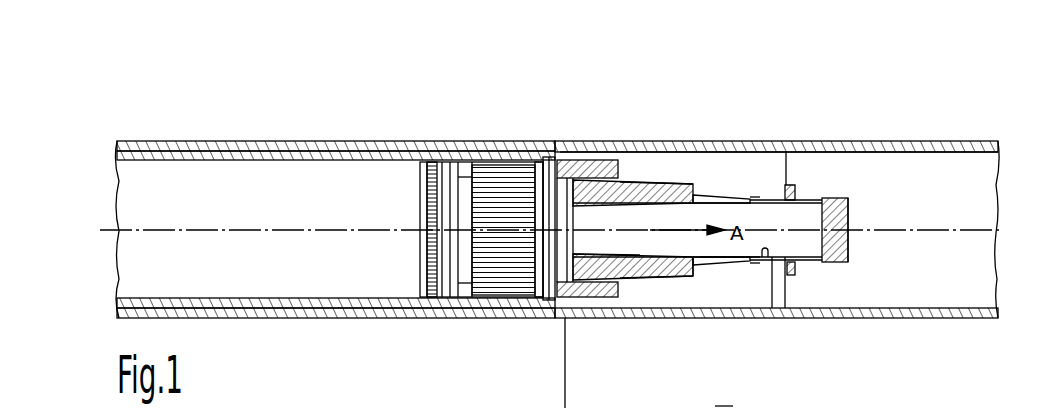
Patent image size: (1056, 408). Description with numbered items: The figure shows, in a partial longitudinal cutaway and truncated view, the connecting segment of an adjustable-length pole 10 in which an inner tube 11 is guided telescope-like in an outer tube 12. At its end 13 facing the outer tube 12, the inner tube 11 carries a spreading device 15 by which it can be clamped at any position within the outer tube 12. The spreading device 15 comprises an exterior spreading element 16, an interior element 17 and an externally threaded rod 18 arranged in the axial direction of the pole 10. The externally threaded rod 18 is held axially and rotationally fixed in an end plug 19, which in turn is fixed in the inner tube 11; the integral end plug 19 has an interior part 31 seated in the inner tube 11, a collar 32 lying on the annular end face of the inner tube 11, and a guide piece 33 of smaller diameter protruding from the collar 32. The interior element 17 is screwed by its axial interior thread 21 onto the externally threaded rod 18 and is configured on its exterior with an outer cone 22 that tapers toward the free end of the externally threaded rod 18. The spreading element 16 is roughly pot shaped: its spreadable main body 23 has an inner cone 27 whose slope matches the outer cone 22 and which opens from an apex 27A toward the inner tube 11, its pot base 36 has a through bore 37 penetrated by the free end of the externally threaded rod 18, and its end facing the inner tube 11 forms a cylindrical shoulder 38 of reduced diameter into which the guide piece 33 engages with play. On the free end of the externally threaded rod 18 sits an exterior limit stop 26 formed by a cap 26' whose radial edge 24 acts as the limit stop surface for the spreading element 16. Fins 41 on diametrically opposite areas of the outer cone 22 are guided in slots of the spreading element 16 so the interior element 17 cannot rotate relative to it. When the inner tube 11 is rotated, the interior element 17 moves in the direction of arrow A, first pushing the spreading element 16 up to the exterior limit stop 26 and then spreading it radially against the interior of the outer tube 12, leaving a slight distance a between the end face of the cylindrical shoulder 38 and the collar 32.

The adjustable-length pole 10 is at (486, 92).
The inner tube 11 is at (300, 148).
The outer tube 12 is at (900, 143).
The end of inner tube 13 is at (500, 290).
The spreading device 15 is at (645, 185).
The spreading element 16 is at (712, 165).
The interior element 17 is at (672, 200).
The externally threaded rod 18 is at (803, 215).
The end plug 19 is at (408, 204).
The interior thread 21 is at (650, 278).
The outer cone 22 is at (672, 280).
The main body 23 is at (730, 290).
The radial edge 24 is at (795, 268).
The exterior limit stop 26 is at (861, 162).
The cap 26' is at (911, 280).
The inner cone 27 is at (727, 197).
The apex 27A is at (757, 190).
The interior part 31 is at (483, 287).
The collar 32 is at (543, 287).
The guide piece 33 is at (573, 318).
The pot base 36 is at (778, 285).
The through bore 37 is at (772, 318).
The cylindrical shoulder 38 is at (604, 160).
The fin 41 is at (697, 215).
The distance a is at (557, 160).